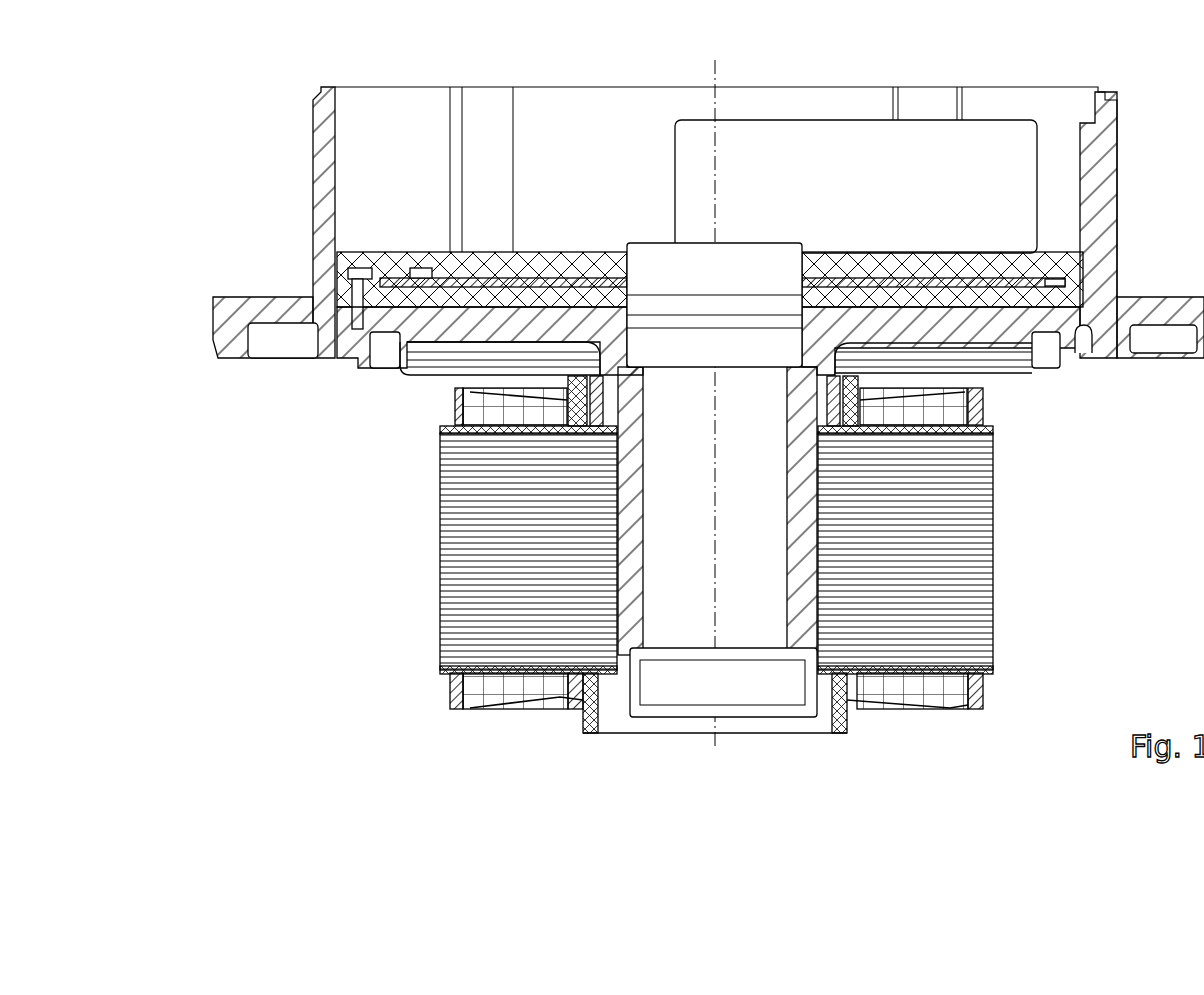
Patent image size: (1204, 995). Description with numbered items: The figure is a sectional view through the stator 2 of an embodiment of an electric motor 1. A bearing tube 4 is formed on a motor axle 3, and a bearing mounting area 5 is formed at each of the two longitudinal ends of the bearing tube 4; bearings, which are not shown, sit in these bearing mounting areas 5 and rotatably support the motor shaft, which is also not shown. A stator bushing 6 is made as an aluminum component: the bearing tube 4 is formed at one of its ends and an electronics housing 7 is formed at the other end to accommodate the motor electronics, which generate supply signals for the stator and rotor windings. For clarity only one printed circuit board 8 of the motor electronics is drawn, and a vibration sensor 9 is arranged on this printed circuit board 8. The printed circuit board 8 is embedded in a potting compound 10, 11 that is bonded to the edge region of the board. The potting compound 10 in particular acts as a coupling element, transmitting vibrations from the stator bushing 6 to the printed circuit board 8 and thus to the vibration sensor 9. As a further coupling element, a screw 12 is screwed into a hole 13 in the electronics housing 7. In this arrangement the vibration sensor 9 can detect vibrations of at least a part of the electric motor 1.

The electric motor 1 is at (248, 113).
The stator 2 is at (457, 497).
The motor axle 3 is at (713, 745).
The bearing tube 4 is at (787, 520).
The bearing mounting area 5 is at (797, 345).
The stator bushing 6 is at (990, 330).
The electronics housing 7 is at (408, 150).
The printed circuit board 8 is at (1062, 285).
The vibration sensor 9 is at (420, 268).
The potting compound 10 is at (497, 272).
The potting compound 11 is at (517, 303).
The screw 12 is at (357, 270).
The hole 13 is at (356, 322).